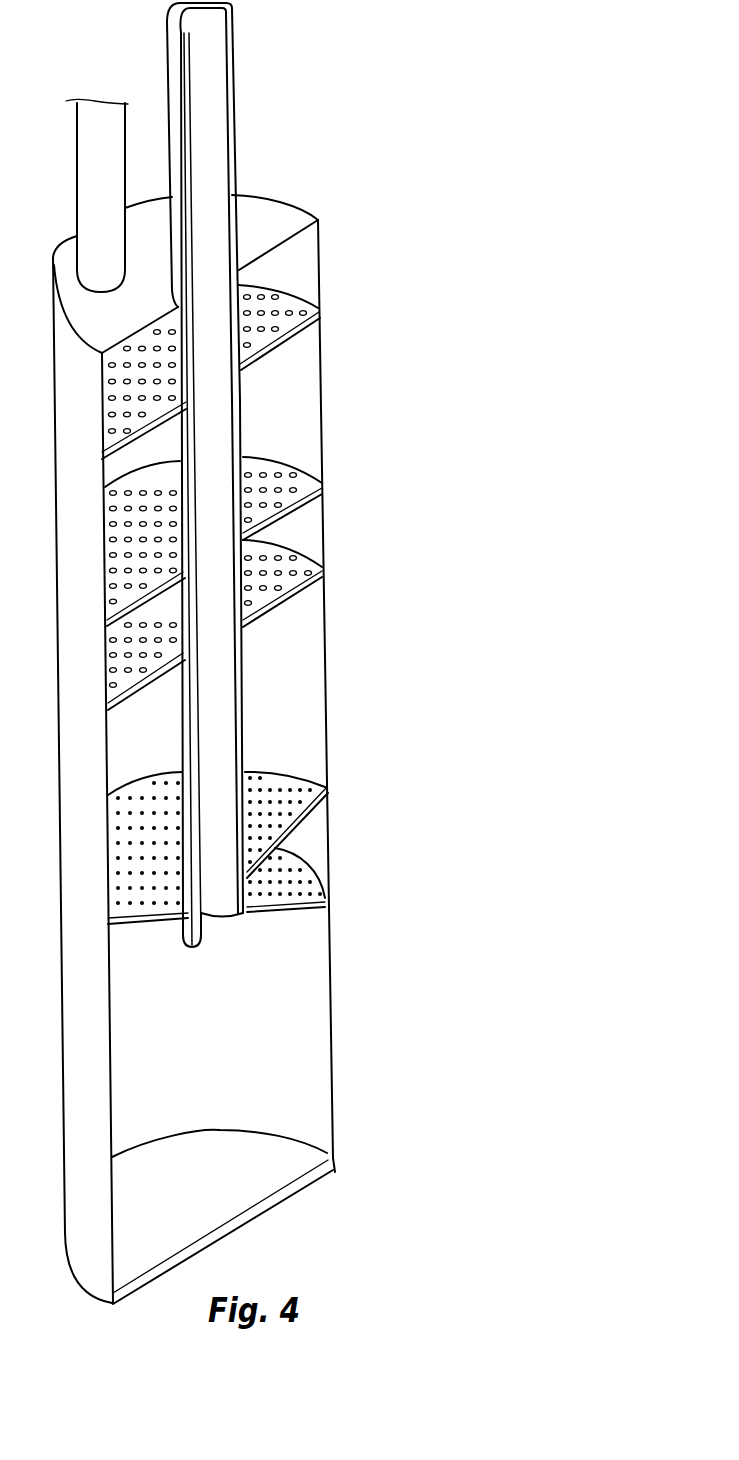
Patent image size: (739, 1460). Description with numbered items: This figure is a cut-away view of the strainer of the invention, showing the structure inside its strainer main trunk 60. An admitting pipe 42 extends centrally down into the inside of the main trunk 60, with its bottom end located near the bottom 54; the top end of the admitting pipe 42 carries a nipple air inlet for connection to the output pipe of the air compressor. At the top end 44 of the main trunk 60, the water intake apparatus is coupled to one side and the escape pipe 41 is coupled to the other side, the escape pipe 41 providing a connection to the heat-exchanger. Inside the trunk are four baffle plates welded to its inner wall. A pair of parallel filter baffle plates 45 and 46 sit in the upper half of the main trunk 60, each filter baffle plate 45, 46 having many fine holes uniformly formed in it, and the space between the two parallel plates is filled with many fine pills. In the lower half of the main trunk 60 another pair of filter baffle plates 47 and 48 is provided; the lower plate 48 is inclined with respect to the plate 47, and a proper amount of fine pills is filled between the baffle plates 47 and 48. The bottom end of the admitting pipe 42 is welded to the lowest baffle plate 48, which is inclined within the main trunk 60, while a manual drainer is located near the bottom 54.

The escape pipe 41 is at (78, 132).
The admitting pipe 42 is at (232, 86).
The top end 44 is at (289, 216).
The strainer main trunk 60 is at (320, 282).
The filter baffle plate 45 is at (297, 338).
The filter baffle plate 46 is at (323, 502).
The filter baffle plate 47 is at (323, 588).
The filter baffle plate 48 is at (328, 907).
The bottom 54 is at (333, 1167).